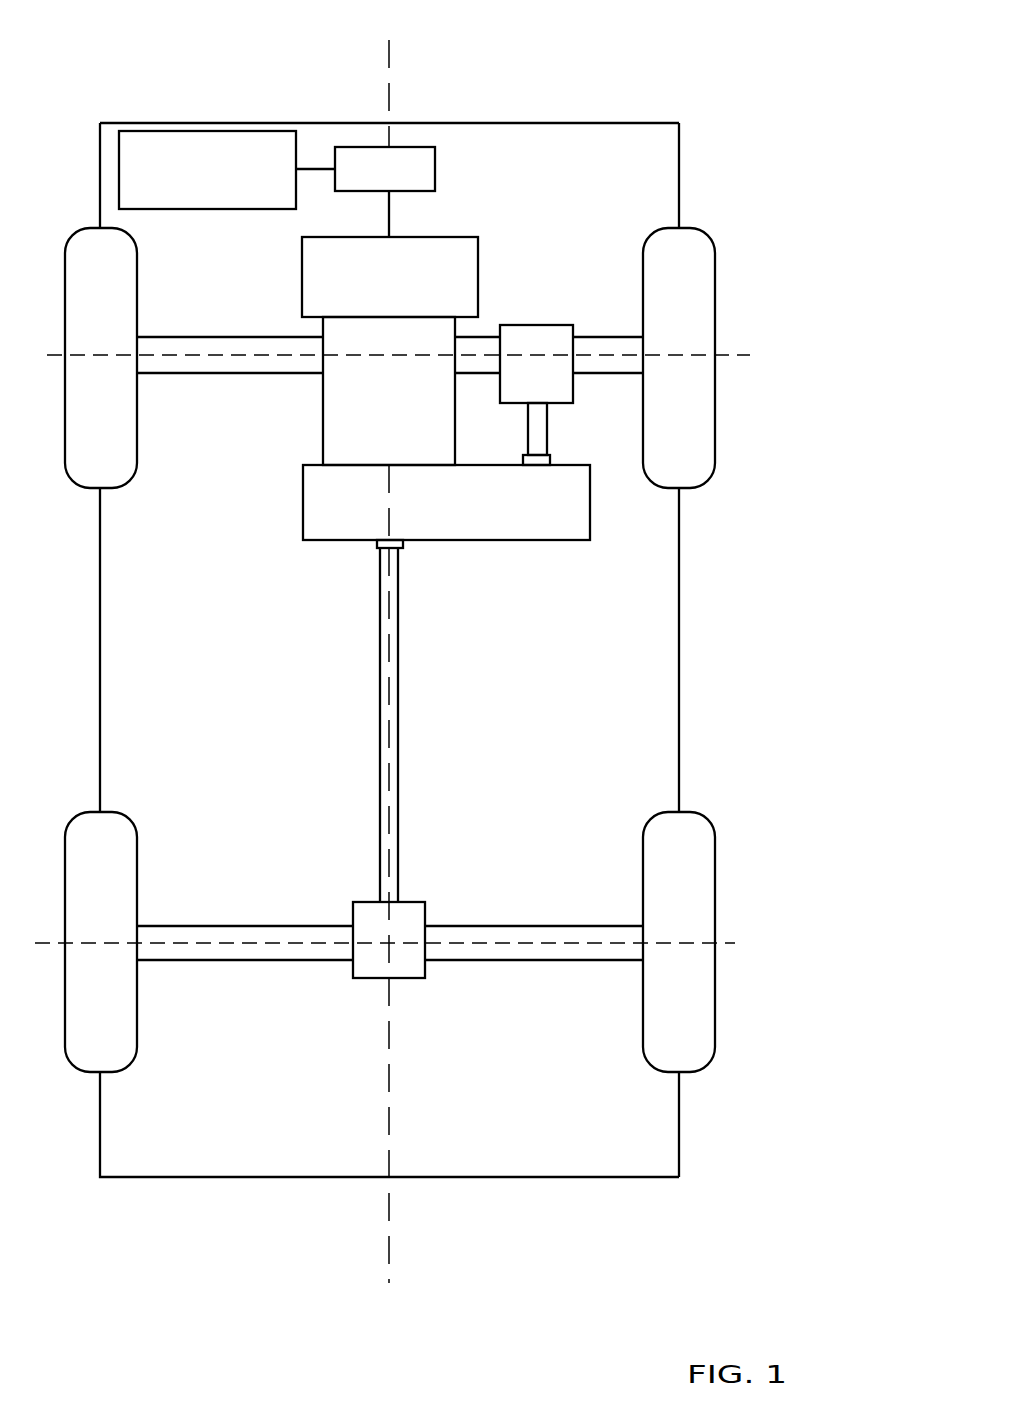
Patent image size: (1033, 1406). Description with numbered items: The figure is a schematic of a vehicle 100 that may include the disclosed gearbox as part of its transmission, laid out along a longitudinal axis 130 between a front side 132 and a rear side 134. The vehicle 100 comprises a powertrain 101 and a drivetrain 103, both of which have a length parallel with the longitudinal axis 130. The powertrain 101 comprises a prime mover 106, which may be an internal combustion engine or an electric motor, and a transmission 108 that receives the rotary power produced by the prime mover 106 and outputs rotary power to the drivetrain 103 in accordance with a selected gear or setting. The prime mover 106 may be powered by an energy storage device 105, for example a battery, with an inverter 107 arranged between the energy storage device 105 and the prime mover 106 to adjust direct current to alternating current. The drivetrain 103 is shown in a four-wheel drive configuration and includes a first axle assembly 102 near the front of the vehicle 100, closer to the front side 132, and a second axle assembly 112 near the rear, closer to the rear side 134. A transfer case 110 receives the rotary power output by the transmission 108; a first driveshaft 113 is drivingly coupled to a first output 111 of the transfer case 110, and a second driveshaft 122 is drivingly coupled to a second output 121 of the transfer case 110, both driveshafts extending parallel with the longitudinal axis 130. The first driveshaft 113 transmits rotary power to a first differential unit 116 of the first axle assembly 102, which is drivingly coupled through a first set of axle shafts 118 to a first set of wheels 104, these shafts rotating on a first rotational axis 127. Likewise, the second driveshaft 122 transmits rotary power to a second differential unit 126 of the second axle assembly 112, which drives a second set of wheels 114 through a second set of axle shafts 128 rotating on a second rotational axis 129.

The vehicle 100 is at (763, 130).
The powertrain 101 is at (354, 335).
The first axle assembly 102 is at (557, 363).
The drivetrain 103 is at (416, 337).
The first set of wheels 104 is at (74, 235).
The energy storage device 105 is at (224, 183).
The prime mover 106 is at (405, 288).
The inverter 107 is at (400, 183).
The transmission 108 is at (405, 402).
The transfer case 110 is at (462, 515).
The first output 111 is at (550, 463).
The second axle assembly 112 is at (404, 920).
The first driveshaft 113 is at (547, 442).
The second set of wheels 114 is at (75, 816).
The first differential unit 116 is at (550, 326).
The first set of axle shafts 118 is at (203, 336).
The second output 121 is at (403, 545).
The second driveshaft 122 is at (400, 753).
The second differential unit 126 is at (423, 913).
The first rotational axis 127 is at (754, 353).
The second set of axle shafts 128 is at (567, 925).
The second rotational axis 129 is at (740, 942).
The longitudinal axis 130 is at (393, 100).
The front side 132 is at (141, 66).
The rear side 134 is at (188, 1249).